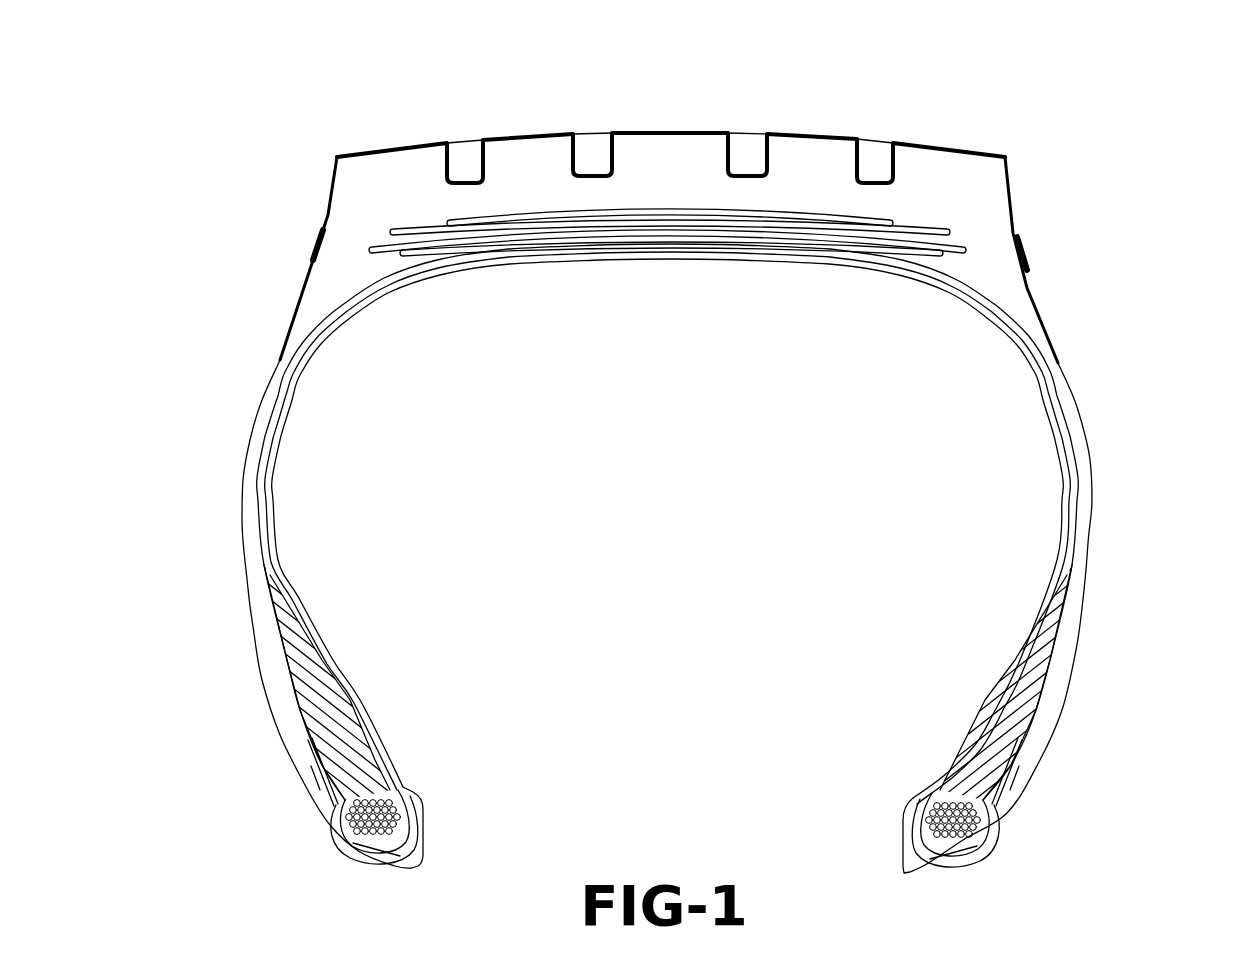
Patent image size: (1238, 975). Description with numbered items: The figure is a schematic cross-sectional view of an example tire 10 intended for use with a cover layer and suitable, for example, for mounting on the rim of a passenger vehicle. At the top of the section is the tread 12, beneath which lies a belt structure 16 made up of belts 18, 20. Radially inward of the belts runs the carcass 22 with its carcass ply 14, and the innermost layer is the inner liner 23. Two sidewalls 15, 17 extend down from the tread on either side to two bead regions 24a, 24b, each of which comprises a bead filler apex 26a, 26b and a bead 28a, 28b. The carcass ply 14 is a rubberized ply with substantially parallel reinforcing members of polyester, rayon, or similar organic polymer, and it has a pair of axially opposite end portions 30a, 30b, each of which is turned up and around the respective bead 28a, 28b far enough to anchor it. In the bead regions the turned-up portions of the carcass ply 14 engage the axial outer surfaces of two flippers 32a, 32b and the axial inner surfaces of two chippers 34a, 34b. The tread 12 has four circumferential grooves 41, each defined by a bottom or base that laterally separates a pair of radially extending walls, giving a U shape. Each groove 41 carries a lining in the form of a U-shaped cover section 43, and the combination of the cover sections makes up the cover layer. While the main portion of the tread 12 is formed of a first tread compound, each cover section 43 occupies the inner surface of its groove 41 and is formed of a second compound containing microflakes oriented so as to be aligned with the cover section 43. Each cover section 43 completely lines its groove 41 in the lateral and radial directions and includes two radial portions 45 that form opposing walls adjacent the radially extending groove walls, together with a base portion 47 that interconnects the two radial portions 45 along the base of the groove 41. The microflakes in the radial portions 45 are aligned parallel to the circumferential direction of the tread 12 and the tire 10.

The tire 10 is at (260, 170).
The tread 12 is at (672, 140).
The carcass ply 14 is at (410, 272).
The sidewall 15 is at (278, 378).
The belt structure 16 is at (688, 219).
The sidewall 17 is at (1078, 407).
The belt 18 is at (800, 230).
The belt 20 is at (732, 229).
The carcass 22 is at (853, 262).
The inner liner 23 is at (355, 318).
The bead region 24a is at (227, 697).
The bead region 24b is at (1143, 700).
The bead filler apex 26a is at (325, 707).
The bead filler apex 26b is at (1005, 722).
The bead 28a is at (375, 818).
The bead 28b is at (960, 826).
The end portion of carcass ply 30a is at (310, 737).
The end portion of carcass ply 30b is at (1030, 730).
The flipper 32a is at (330, 790).
The flipper 32b is at (1000, 800).
The chipper 34a is at (313, 770).
The chipper 34b is at (1010, 778).
The circumferential groove 41 is at (467, 152).
The U-shaped cover section 43 is at (452, 136).
The radial portion 45 is at (446, 151).
The base portion 47 is at (458, 184).